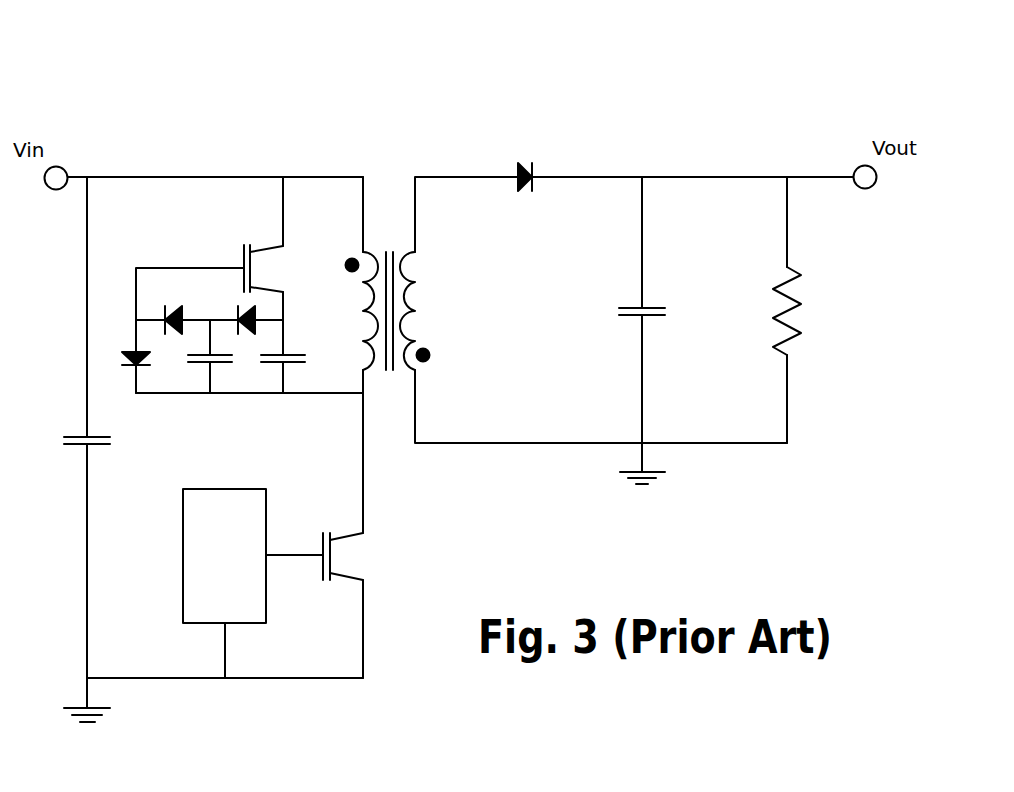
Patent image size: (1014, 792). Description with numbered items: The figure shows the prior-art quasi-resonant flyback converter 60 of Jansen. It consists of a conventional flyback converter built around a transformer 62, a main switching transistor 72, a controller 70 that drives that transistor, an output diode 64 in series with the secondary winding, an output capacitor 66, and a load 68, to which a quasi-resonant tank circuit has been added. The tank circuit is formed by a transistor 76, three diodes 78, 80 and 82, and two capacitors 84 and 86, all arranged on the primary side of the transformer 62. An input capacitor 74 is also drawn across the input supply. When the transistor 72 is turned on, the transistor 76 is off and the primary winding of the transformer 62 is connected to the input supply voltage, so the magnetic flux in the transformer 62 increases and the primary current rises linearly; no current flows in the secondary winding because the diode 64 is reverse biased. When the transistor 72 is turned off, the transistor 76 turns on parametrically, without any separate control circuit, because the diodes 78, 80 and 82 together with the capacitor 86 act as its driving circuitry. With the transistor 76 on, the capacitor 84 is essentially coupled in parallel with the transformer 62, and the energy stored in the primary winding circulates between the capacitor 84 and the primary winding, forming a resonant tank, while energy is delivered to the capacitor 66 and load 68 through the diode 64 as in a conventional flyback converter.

The quasi-resonant flyback converter 60 is at (759, 114).
The transformer 62 is at (385, 233).
The diode 64 is at (532, 163).
The capacitor 66 is at (655, 307).
The load 68 is at (795, 273).
The controller 70 is at (245, 489).
The transistor 72 is at (325, 527).
The input capacitor 74 is at (73, 450).
The transistor 76 is at (245, 240).
The diode 78 is at (238, 307).
The diode 80 is at (170, 306).
The diode 82 is at (123, 351).
The capacitor 84 is at (289, 363).
The capacitor 86 is at (216, 363).